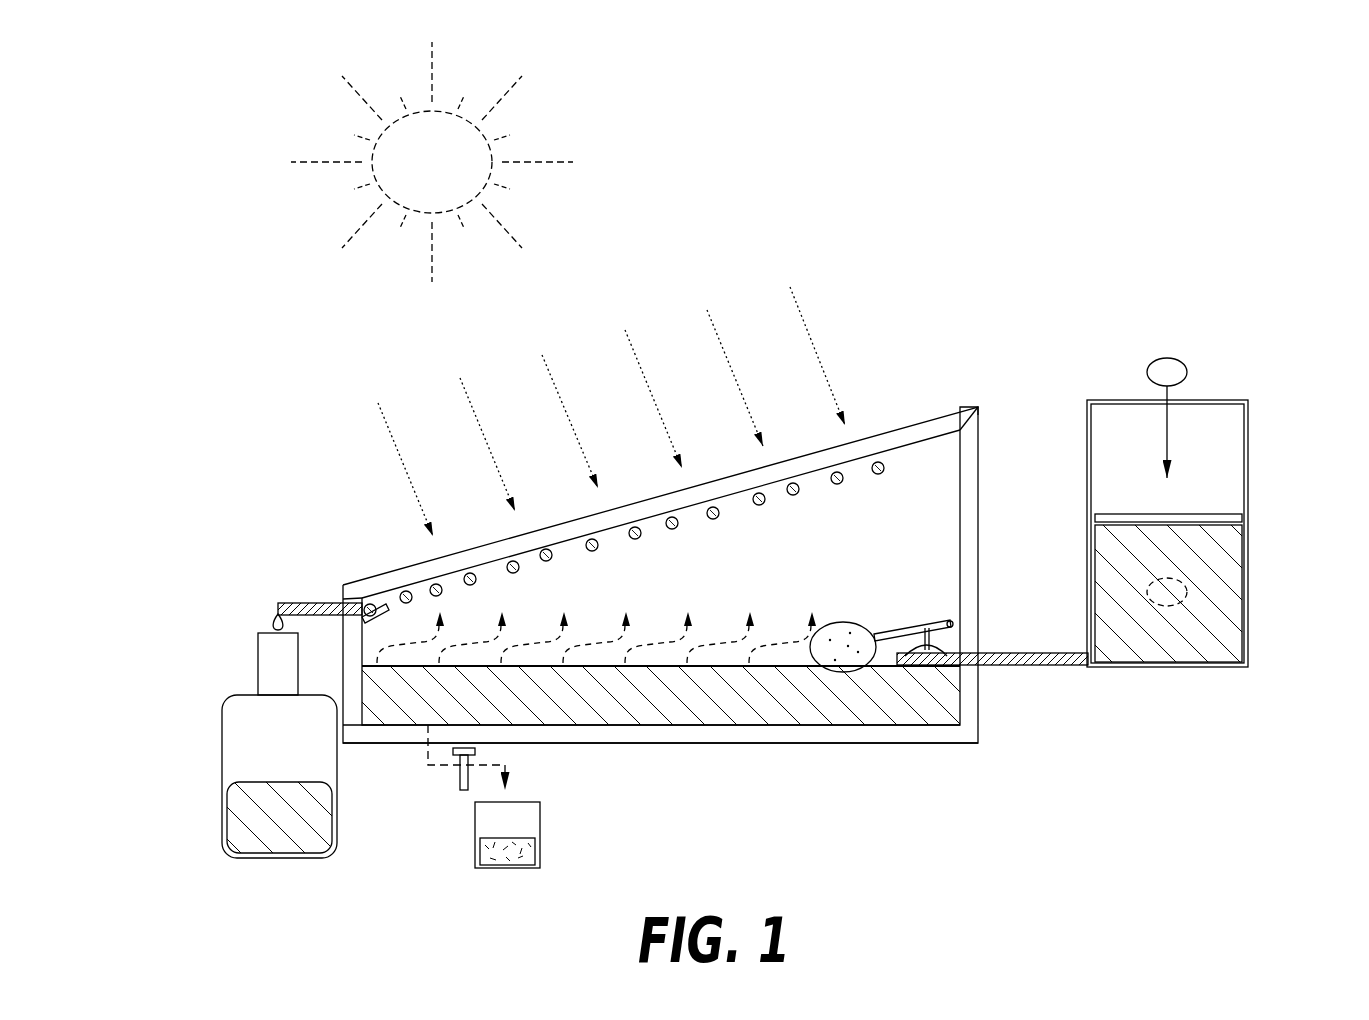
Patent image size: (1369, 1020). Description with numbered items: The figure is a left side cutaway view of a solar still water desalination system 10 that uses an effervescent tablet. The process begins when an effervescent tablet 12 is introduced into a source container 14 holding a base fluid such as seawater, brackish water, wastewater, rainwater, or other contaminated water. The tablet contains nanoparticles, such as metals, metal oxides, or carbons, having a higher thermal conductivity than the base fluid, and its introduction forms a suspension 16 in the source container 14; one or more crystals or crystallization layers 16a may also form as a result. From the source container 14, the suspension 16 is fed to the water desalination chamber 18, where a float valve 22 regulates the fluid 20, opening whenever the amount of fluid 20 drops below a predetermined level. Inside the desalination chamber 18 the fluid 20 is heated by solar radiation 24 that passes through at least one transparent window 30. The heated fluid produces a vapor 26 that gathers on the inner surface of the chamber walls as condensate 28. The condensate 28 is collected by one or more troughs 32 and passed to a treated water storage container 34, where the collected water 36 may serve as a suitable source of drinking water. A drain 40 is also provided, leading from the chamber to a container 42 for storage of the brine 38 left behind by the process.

The water desalination system 10 is at (297, 332).
The effervescent tablet 12 is at (1187, 367).
The source container 14 is at (1249, 440).
The suspension 16 is at (1235, 635).
The crystals or crystallization layers 16a is at (1243, 519).
The water desalination chamber 18 is at (388, 540).
The fluid 20 is at (775, 725).
The float valve 22 is at (845, 622).
The solar radiation 24 is at (813, 342).
The vapor 26 is at (737, 640).
The condensate 28 is at (843, 478).
The transparent window 30 is at (920, 428).
The trough 32 is at (363, 618).
The treated water storage container 34 is at (222, 757).
The collected water 36 is at (232, 818).
The brine 38 is at (532, 852).
The drain 40 is at (472, 756).
The container 42 is at (540, 817).